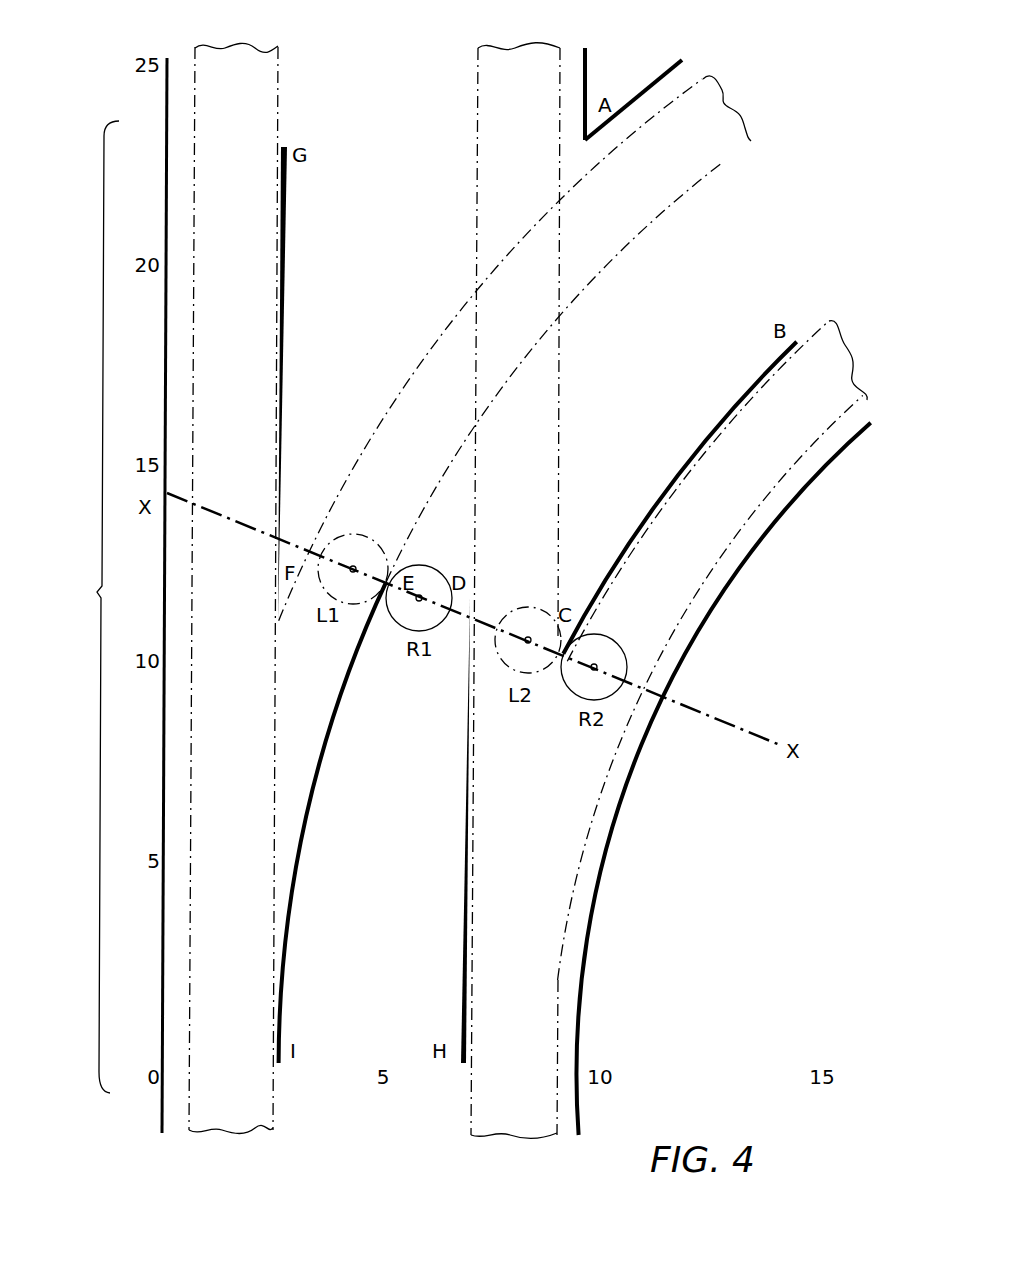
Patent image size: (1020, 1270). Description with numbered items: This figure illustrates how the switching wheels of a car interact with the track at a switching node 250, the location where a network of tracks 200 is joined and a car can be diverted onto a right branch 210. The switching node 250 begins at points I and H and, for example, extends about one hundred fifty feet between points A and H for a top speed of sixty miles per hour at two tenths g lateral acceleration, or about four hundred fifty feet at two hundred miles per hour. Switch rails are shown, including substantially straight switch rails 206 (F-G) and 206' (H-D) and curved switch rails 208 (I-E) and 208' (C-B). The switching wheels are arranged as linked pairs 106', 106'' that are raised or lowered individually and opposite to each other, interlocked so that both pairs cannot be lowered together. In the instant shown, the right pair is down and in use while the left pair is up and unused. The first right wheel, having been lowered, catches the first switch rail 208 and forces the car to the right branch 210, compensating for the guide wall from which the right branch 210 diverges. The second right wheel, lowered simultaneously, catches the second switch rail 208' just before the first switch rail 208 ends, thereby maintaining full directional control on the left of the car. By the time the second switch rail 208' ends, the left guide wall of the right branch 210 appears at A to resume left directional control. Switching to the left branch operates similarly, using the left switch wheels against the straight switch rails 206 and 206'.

The track 200 is at (392, 101).
The right branch 210 is at (698, 309).
The straight switch rail 206 is at (319, 384).
The straight switch rail 206' is at (426, 830).
The first curved switch rail 208 is at (333, 822).
The second curved switch rail 208' is at (698, 491).
The pair of switching wheels 106' is at (381, 680).
The pair of switching wheels 106'' is at (595, 550).
The switching node 250 is at (78, 607).